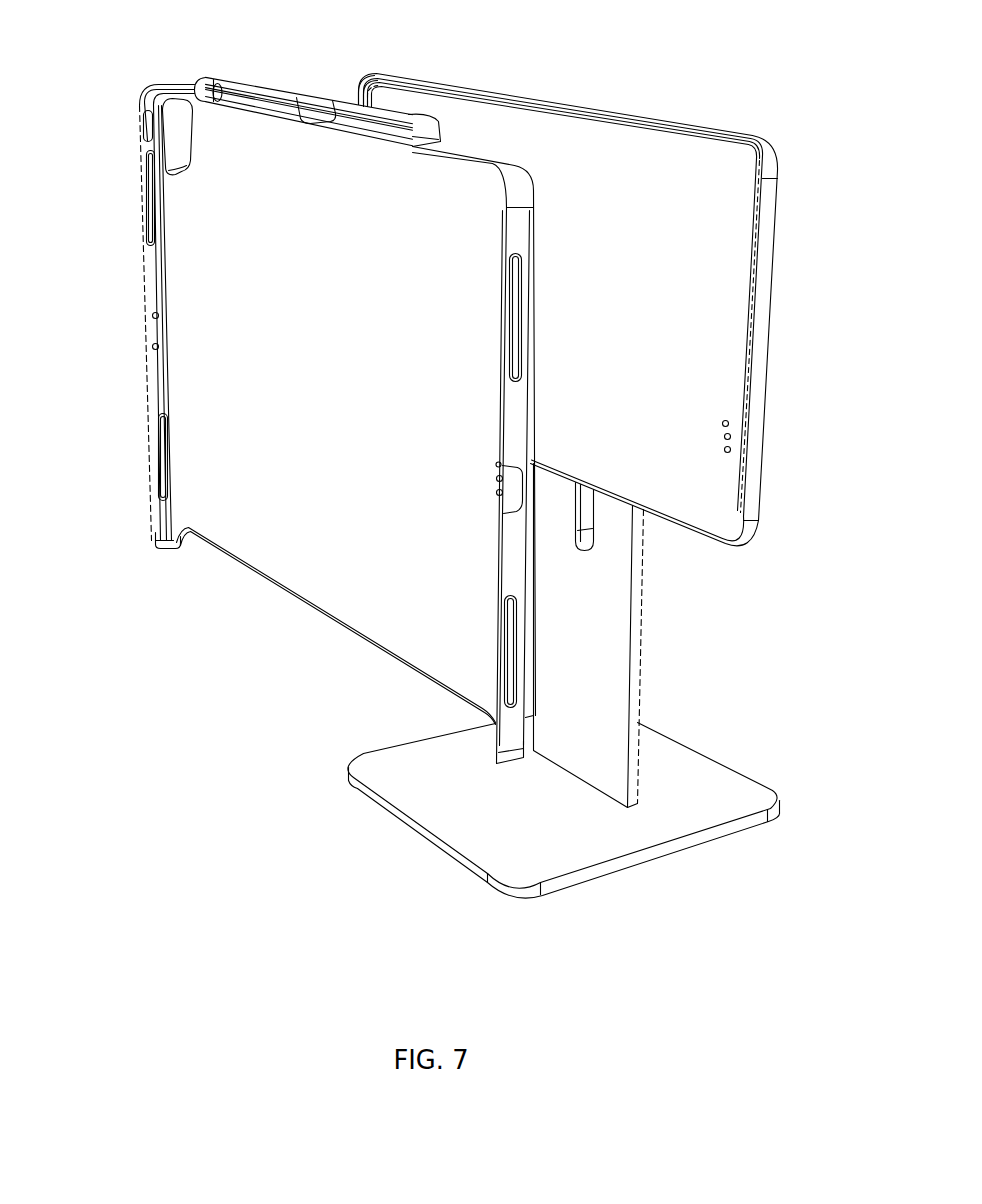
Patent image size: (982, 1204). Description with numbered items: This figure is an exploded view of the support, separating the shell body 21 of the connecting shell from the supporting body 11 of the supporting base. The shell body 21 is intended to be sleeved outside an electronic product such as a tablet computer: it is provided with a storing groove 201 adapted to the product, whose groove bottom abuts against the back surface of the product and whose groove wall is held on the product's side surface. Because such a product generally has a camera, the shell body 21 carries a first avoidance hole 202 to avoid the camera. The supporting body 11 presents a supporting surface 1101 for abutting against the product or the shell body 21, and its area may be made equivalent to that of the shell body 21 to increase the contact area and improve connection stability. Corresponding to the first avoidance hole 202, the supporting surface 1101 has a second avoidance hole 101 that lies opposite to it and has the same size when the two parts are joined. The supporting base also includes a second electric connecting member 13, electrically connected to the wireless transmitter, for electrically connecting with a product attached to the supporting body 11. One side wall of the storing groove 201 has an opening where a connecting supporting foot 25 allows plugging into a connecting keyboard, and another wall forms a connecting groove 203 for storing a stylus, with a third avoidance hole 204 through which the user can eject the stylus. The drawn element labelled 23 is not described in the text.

The supporting body 11 is at (737, 313).
The supporting surface 1101 is at (712, 183).
The second avoidance hole 101 is at (384, 98).
The second electric connecting member 13 is at (730, 436).
The storing groove 201 is at (190, 327).
The first avoidance hole 202 is at (172, 143).
The connecting groove 203 is at (241, 88).
The third avoidance hole 204 is at (313, 100).
The shell body 21 is at (282, 553).
The connecting hook 23 is at (500, 494).
The connecting supporting foot 25 is at (170, 548).